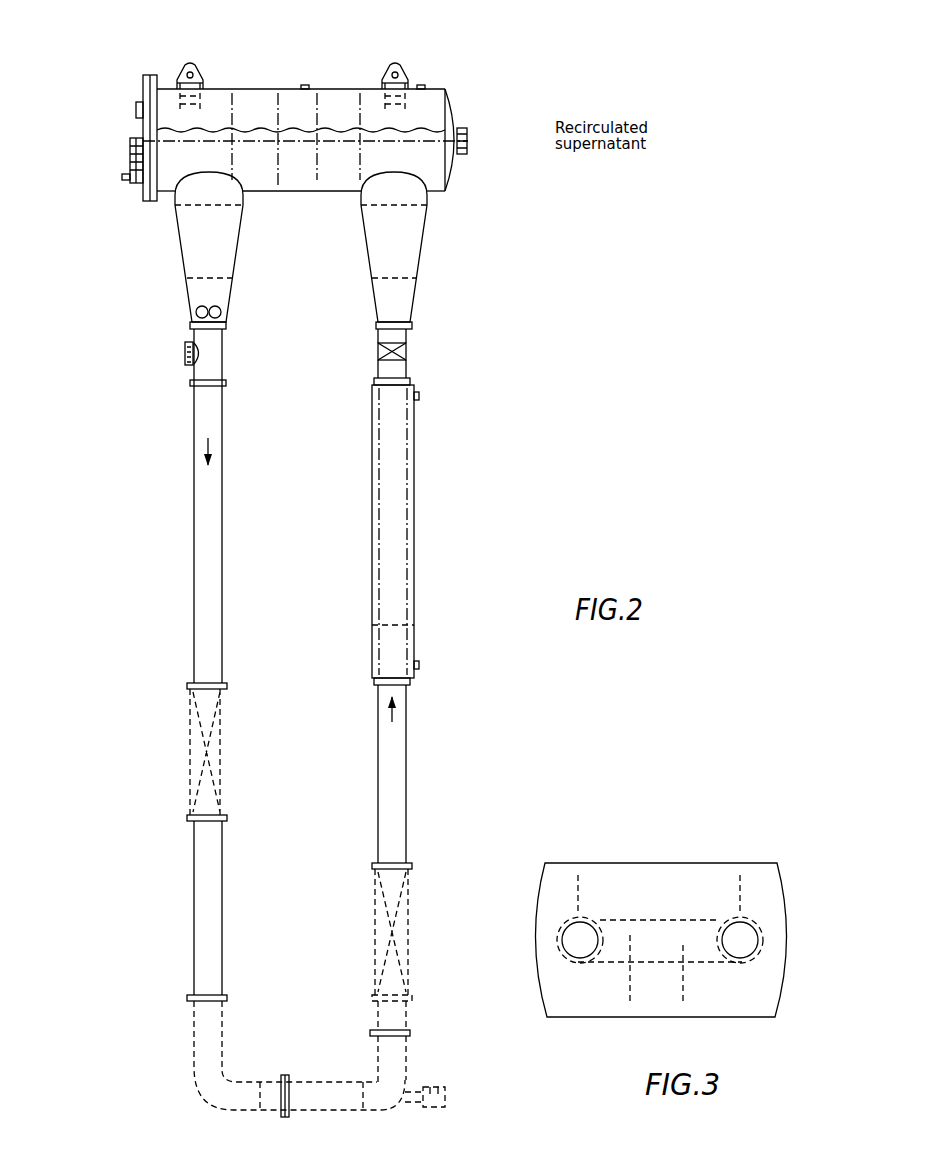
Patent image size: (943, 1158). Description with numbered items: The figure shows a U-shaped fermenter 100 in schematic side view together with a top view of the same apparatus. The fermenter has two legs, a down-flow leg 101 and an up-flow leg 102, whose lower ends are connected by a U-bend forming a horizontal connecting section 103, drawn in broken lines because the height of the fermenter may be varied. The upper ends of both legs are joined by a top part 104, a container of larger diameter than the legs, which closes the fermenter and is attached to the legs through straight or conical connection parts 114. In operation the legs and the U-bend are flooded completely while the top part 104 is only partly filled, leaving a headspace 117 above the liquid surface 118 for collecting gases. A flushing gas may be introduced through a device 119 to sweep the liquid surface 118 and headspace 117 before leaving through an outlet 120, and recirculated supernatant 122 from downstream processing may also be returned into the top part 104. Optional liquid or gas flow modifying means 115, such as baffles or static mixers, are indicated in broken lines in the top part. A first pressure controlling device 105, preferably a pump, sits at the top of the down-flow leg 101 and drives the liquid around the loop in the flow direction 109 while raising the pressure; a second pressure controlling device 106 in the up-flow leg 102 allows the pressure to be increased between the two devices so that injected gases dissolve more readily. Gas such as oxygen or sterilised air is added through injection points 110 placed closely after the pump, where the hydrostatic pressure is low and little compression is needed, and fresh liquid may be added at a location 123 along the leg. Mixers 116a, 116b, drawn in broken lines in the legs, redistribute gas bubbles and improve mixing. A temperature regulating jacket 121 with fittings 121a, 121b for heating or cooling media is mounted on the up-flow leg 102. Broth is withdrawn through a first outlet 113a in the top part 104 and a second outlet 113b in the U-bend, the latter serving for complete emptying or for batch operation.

In FIG. 2, the U-shaped fermenter 100 is at (478, 212).
In FIG. 3, the U-shaped fermenter 100 is at (524, 886).
In FIG. 2, the down-flow leg 101 is at (227, 540).
In FIG. 3, the down-flow leg 101 is at (568, 948).
In FIG. 2, the up-flow leg 102 is at (356, 632).
In FIG. 3, the up-flow leg 102 is at (743, 950).
In FIG. 2, the horizontal connecting section (U-bend) 103 is at (300, 1070).
In FIG. 3, the horizontal connecting section (U-bend) 103 is at (645, 918).
In FIG. 2, the top part 104 is at (458, 108).
In FIG. 3, the top part 104 is at (534, 990).
In FIG. 2, the first pressure controlling device 105 is at (197, 308).
In FIG. 2, the second pressure controlling device 106 is at (408, 354).
In FIG. 2, the liquid flow direction 109 is at (211, 445).
In FIG. 2, the injection points 110 is at (182, 354).
In FIG. 2, the first outlet 113a is at (122, 172).
In FIG. 2, the second outlet 113b is at (437, 1088).
In FIG. 2, the connection parts 114 is at (182, 237).
In FIG. 3, the connection parts 114 is at (580, 960).
In FIG. 2, the liquid or gas flow modifying means 115 is at (320, 107).
In FIG. 3, the liquid or gas flow modifying means 115 is at (632, 996).
In FIG. 2, the first mixer 116a is at (222, 751).
In FIG. 2, the second mixer 116b is at (405, 935).
In FIG. 2, the headspace 117 is at (212, 102).
In FIG. 2, the liquid surface 118 is at (167, 128).
In FIG. 2, the flushing gas inlet device 119 is at (134, 110).
In FIG. 2, the flushing gas outlet 120 is at (421, 86).
In FIG. 2, the temperature regulating device 121 is at (400, 563).
In FIG. 2, the jacket fitting 121a is at (421, 396).
In FIG. 2, the jacket fitting 121b is at (416, 664).
In FIG. 2, the recirculated supernatant 122 is at (473, 140).
In FIG. 2, the fresh liquid addition location 123 is at (192, 420).